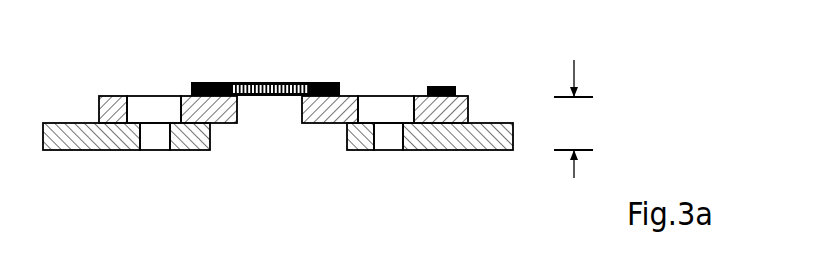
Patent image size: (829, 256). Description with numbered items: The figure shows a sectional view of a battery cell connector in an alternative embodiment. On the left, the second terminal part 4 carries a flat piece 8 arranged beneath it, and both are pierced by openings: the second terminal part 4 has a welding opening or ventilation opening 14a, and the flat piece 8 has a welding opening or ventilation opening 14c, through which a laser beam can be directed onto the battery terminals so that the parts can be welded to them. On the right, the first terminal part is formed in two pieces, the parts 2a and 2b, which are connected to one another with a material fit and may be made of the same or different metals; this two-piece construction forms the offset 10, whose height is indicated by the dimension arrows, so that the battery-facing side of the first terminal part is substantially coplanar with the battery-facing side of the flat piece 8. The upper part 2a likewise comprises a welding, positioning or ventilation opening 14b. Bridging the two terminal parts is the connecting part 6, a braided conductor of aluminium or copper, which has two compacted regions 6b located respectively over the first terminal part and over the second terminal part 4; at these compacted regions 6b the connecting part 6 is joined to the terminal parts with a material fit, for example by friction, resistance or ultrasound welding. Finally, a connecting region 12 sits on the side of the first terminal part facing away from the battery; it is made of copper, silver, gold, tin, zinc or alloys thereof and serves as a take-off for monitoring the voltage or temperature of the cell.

The second terminal part 4 is at (112, 95).
The welding opening or ventilation opening 14a is at (157, 103).
The first piece of the first terminal part 2a is at (351, 97).
The welding opening, positioning opening or ventilation opening 14b is at (389, 110).
The compacted regions 6b is at (213, 82).
The connecting part 6 is at (274, 67).
The connecting region 12 is at (448, 85).
The flat piece 8 is at (77, 150).
The welding opening or ventilation opening 14c is at (160, 143).
The second piece of the first terminal part 2b is at (470, 150).
The offset 10 is at (573, 119).